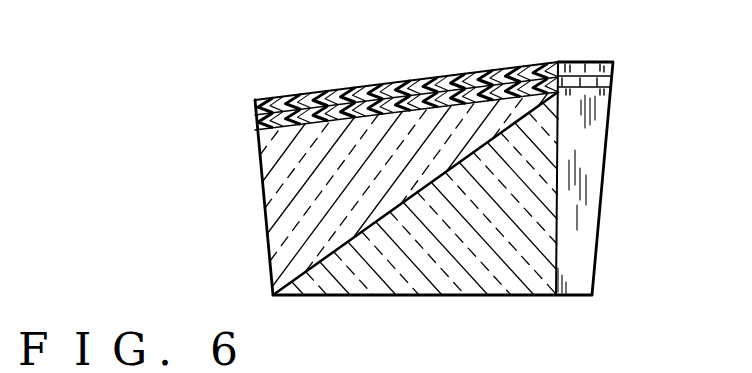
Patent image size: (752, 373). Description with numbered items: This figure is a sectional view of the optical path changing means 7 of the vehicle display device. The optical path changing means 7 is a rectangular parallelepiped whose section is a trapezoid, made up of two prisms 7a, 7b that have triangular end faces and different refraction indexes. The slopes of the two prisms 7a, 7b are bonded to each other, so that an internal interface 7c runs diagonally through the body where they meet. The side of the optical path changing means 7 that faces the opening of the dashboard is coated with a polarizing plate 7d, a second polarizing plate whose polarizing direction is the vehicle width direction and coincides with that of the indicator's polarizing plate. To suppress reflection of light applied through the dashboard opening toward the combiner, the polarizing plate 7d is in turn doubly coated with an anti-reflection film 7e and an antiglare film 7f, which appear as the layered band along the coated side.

The optical path changing means 7 is at (620, 200).
The prism 7a is at (378, 150).
The prism 7b is at (476, 247).
The internal interface 7c is at (372, 237).
The polarizing plate 7d is at (485, 88).
The anti-reflection film 7e is at (272, 102).
The antiglare film 7f is at (318, 100).